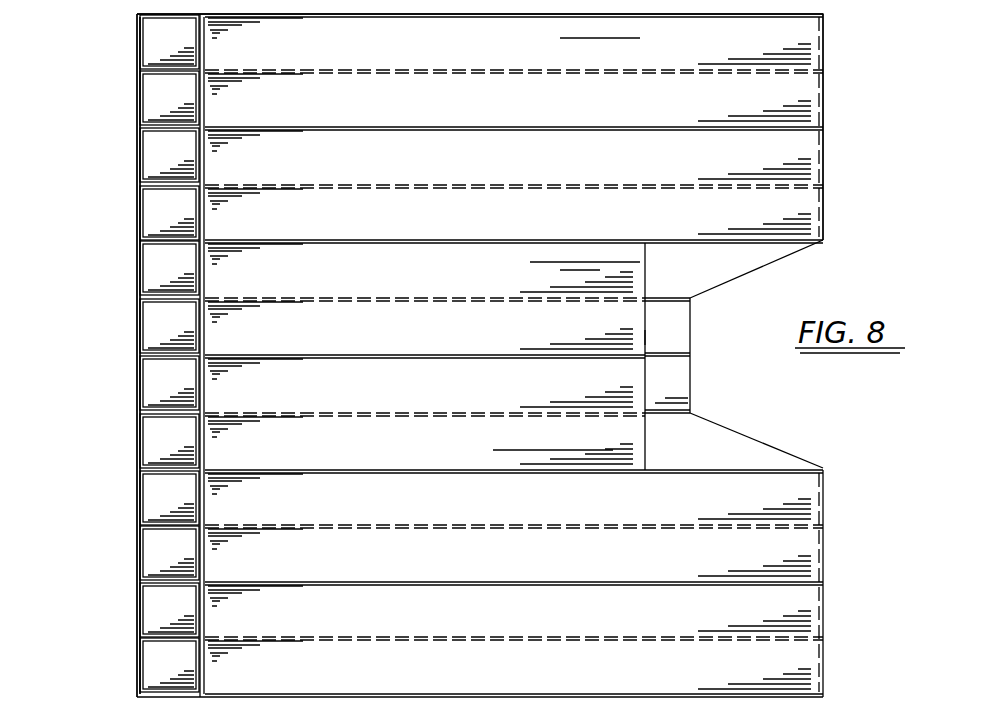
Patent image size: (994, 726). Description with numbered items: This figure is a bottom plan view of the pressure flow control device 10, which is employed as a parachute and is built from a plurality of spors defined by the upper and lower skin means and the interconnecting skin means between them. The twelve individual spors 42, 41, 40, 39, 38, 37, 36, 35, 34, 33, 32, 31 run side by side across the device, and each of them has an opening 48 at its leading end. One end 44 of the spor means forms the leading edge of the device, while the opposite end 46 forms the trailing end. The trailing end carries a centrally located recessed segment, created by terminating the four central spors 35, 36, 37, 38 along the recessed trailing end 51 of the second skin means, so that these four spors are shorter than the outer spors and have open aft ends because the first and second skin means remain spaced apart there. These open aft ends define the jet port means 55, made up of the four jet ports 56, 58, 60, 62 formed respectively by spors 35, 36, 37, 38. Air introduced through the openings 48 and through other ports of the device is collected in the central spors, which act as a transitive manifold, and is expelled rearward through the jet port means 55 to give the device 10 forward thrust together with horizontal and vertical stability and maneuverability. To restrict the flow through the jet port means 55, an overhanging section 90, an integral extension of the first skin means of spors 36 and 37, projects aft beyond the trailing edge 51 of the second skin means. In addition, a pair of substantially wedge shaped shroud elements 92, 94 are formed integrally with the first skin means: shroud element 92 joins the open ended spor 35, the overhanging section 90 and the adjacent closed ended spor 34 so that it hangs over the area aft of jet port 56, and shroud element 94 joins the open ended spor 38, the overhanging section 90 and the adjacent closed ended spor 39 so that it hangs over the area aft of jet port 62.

The pressure flow control device 10 is at (126, 71).
The end of spor means 44 is at (135, 228).
The trailing end 46 is at (823, 152).
The opening 48 is at (150, 437).
The spor 42 is at (383, 53).
The spor 41 is at (383, 109).
The spor 40 is at (383, 166).
The spor 39 is at (383, 224).
The spor 38 is at (383, 279).
The spor 37 is at (383, 337).
The spor 36 is at (383, 394).
The spor 35 is at (383, 452).
The spor 34 is at (383, 509).
The spor 33 is at (383, 564).
The spor 32 is at (383, 621).
The spor 31 is at (383, 676).
The jet port 62 is at (645, 264).
The jet port 60 is at (645, 315).
The jet port 58 is at (645, 370).
The jet port 56 is at (648, 450).
The jet port means 55 is at (652, 337).
The overhanging section 90 is at (690, 370).
The recessed trailing end 51 is at (645, 396).
The shroud element 94 is at (792, 255).
The shroud element 92 is at (773, 450).